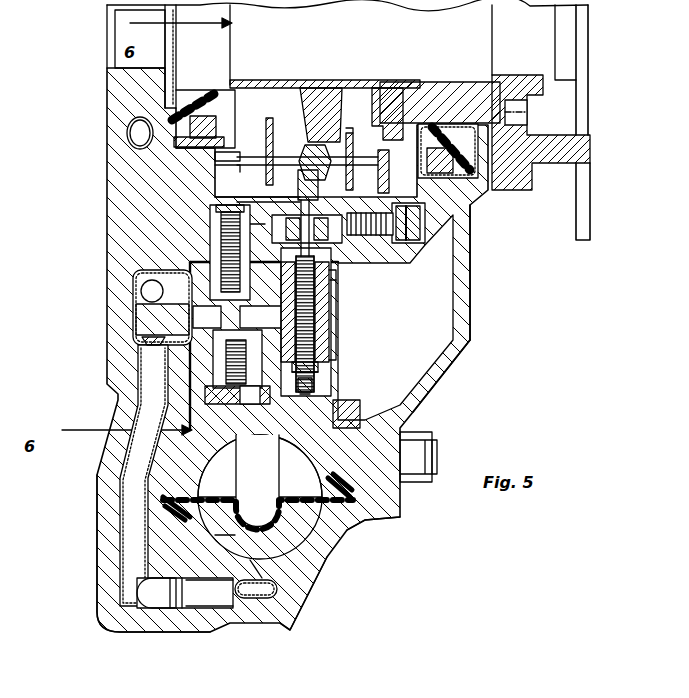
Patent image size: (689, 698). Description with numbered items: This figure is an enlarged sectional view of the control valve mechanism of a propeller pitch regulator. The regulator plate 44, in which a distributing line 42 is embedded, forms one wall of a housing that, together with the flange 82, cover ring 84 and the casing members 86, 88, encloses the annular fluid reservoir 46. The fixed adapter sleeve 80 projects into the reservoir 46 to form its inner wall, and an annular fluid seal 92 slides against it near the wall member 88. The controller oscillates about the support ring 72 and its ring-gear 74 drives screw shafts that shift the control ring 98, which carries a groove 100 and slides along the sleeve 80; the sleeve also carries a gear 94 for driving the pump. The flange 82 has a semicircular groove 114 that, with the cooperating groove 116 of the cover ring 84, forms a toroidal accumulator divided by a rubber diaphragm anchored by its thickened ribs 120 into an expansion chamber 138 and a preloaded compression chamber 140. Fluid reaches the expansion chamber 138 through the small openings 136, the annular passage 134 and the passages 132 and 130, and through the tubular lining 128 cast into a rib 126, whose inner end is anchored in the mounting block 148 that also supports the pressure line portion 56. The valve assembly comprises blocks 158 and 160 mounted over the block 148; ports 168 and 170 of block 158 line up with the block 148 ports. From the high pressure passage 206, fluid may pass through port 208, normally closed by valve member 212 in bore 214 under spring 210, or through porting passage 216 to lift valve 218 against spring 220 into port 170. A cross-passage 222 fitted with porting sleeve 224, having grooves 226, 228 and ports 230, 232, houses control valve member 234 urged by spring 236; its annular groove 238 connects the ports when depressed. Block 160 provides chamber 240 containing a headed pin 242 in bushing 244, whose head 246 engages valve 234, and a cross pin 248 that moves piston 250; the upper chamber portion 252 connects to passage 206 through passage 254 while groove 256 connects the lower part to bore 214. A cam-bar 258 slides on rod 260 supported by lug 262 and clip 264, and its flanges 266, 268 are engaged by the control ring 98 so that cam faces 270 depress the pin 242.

The distributing line 42 is at (130, 133).
The regulator plate 44 is at (120, 88).
The reservoir 46 is at (448, 288).
The pressure line portion 56 is at (156, 291).
The support ring 72 is at (522, 82).
The ring-gear 74 is at (520, 118).
The adapter sleeve 80 is at (208, 98).
The casing member (flange) 82 is at (262, 440).
The cover ring 84 is at (286, 612).
The casing member 86 is at (390, 512).
The casing member (wall member) 88 is at (460, 347).
The annular fluid seal 92 is at (185, 108).
The gear 94 is at (385, 160).
The control ring 98 is at (318, 96).
The groove 100 is at (310, 130).
The peripheral groove 114 is at (260, 497).
The cooperating groove 116 is at (245, 520).
The thickened ribs 120 is at (165, 500).
The radially extending rib 126 is at (105, 538).
The tubular lining 128 is at (127, 575).
The passage 130 is at (143, 594).
The passage 132 is at (224, 605).
The annular passage 134 is at (262, 598).
The small openings 136 is at (296, 585).
The expansion chamber 138 is at (296, 548).
The compression chamber 140 is at (396, 478).
The mounting block 148 is at (185, 296).
The block 158 is at (358, 410).
The block 160 is at (396, 213).
The port 168 is at (140, 272).
The port 170 is at (182, 363).
The passage 206 is at (287, 322).
The port 208 is at (262, 346).
The spring 210 is at (238, 243).
The valve member 212 is at (210, 317).
The bore 214 is at (232, 262).
The porting passage 216 is at (229, 359).
The valve 218 is at (264, 402).
The spring 220 is at (237, 402).
The cross-passage 222 is at (330, 292).
The porting sleeve 224 is at (330, 302).
The peripheral groove 226 is at (330, 343).
The peripheral groove 228 is at (330, 314).
The ports 230 is at (330, 326).
The ports 232 is at (330, 356).
The control valve member 234 is at (330, 368).
The spring 236 is at (330, 382).
The annular groove 238 is at (392, 331).
The chamber 240 is at (360, 268).
The headed pin 242 is at (325, 185).
The bushing 244 is at (292, 157).
The head 246 is at (378, 252).
The cross pin 248 is at (370, 171).
The piston member 250 is at (396, 232).
The upper portion of chamber 252 is at (235, 192).
The passage 254 is at (235, 205).
The groove 256 is at (235, 224).
The cam-bar 258 is at (266, 165).
The rod 260 is at (232, 172).
The lug 262 is at (235, 163).
The clip 264 is at (462, 100).
The flange 266 is at (270, 125).
The flange 268 is at (352, 160).
The cam faces 270 is at (322, 150).